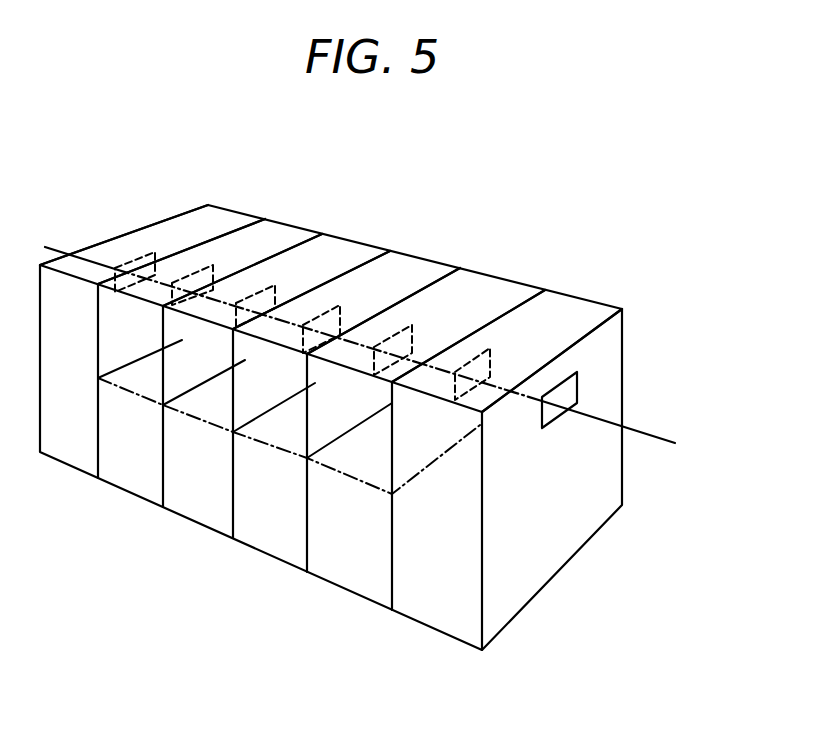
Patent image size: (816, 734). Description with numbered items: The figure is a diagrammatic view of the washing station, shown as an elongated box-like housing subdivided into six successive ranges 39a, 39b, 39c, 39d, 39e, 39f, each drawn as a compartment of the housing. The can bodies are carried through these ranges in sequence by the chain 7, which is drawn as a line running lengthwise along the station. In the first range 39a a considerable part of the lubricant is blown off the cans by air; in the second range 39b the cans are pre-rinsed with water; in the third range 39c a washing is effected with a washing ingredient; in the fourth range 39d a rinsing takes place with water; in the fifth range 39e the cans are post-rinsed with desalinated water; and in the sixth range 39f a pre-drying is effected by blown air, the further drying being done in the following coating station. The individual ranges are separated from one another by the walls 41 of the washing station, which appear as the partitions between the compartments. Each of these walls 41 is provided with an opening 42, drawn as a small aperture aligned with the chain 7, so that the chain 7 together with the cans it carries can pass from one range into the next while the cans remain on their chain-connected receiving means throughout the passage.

The first range 39a is at (228, 222).
The second range 39b is at (300, 241).
The third range 39c is at (367, 253).
The fourth range 39d is at (430, 278).
The fifth range 39e is at (497, 299).
The sixth range 39f is at (580, 318).
The walls 41 is at (405, 448).
The openings 42 is at (568, 390).
The chain 7 is at (660, 438).